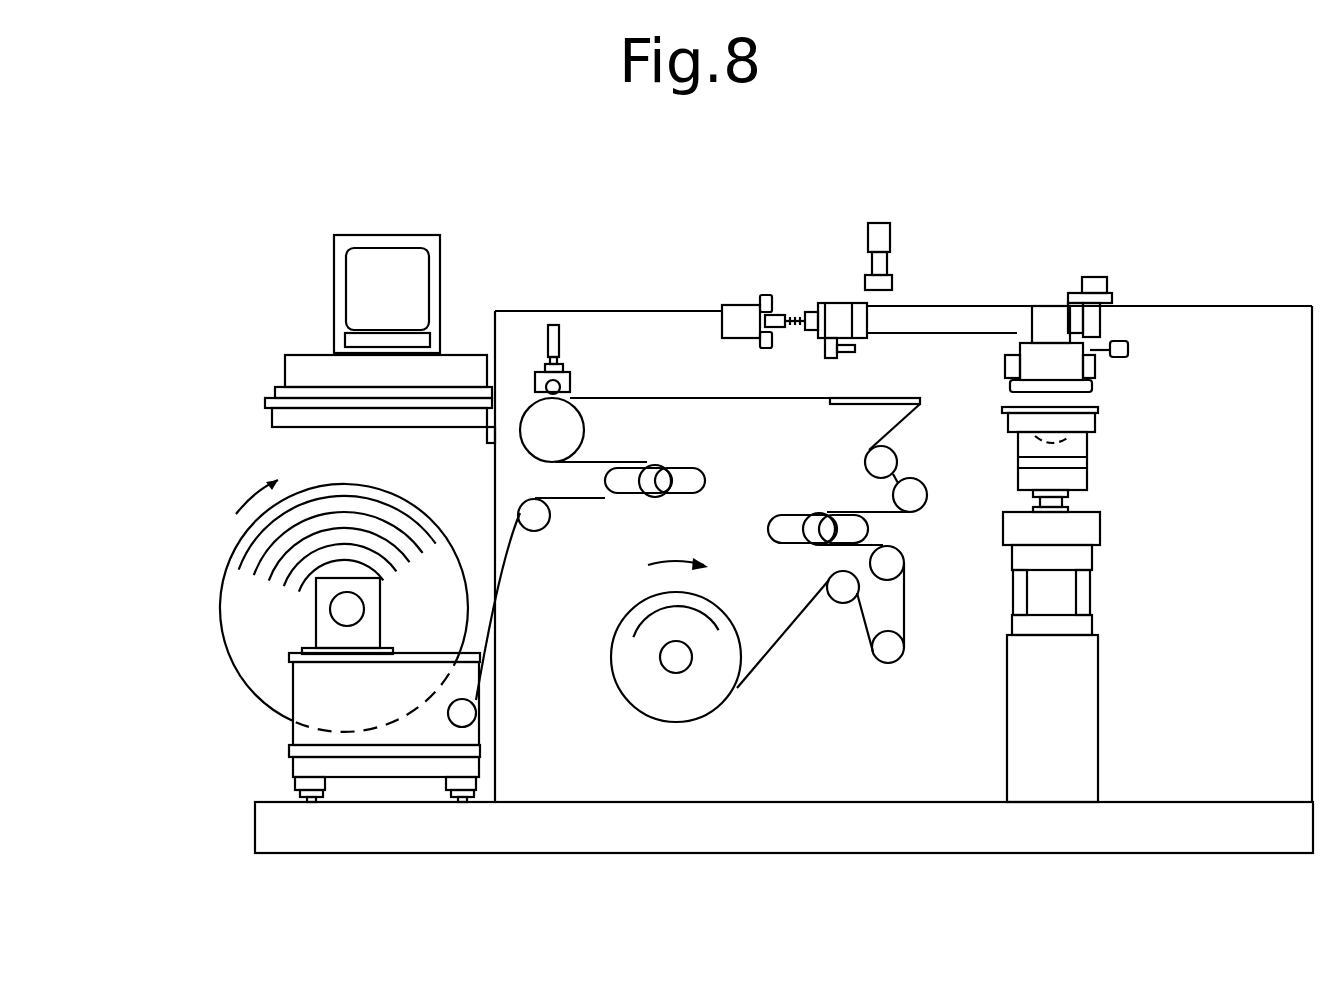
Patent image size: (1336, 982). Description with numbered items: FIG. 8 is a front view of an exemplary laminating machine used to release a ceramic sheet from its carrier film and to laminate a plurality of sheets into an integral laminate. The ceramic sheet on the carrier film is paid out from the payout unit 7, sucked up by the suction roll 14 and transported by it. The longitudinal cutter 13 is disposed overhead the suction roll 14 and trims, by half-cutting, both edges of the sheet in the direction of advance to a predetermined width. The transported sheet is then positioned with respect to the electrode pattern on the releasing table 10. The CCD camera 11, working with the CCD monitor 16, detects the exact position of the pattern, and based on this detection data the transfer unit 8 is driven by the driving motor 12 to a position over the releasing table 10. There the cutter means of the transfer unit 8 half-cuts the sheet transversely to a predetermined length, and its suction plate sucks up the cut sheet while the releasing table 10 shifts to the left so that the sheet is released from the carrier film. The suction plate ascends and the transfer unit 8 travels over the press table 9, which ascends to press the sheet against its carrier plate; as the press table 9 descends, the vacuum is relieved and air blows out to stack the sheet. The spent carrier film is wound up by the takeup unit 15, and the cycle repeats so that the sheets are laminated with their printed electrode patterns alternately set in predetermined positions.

The payout unit 7 is at (210, 570).
The transfer unit 8 is at (1055, 357).
The press table 9 is at (1118, 426).
The releasing table 10 is at (882, 414).
The CCD camera 11 is at (868, 238).
The driving motor 12 is at (742, 318).
The longitudinal cutter 13 is at (541, 350).
The suction roll 14 is at (578, 432).
The takeup unit 15 is at (662, 745).
The CCD monitor 16 is at (432, 228).